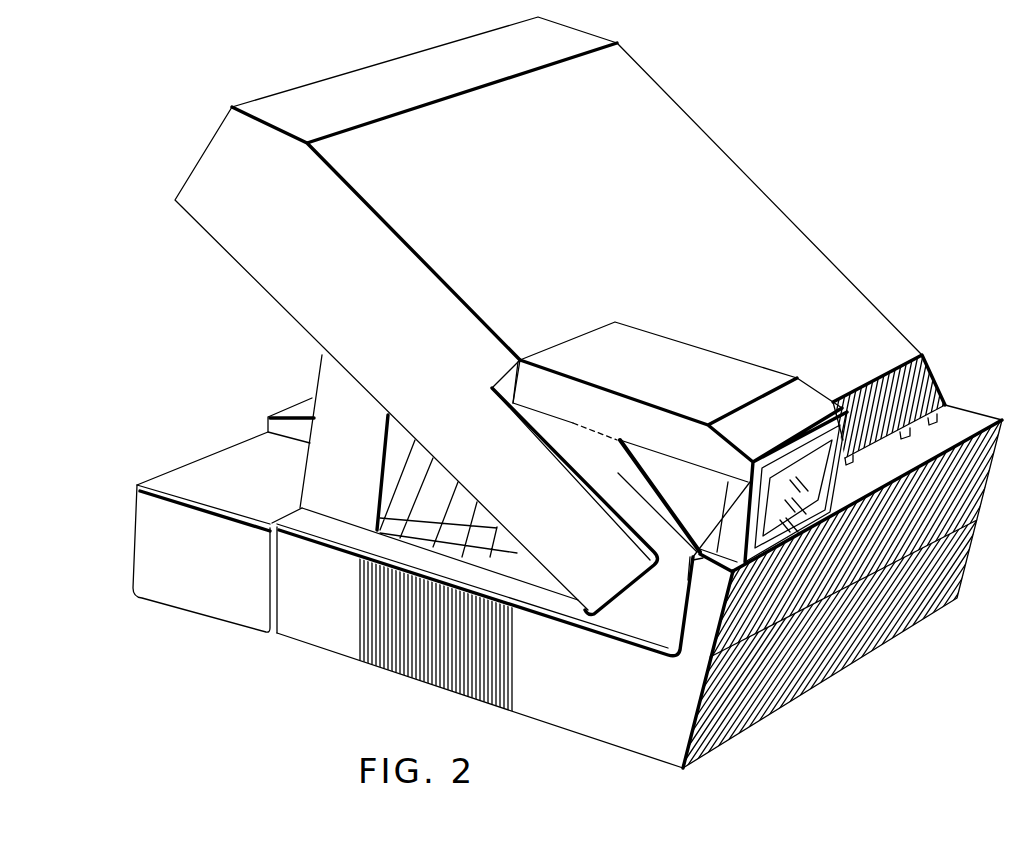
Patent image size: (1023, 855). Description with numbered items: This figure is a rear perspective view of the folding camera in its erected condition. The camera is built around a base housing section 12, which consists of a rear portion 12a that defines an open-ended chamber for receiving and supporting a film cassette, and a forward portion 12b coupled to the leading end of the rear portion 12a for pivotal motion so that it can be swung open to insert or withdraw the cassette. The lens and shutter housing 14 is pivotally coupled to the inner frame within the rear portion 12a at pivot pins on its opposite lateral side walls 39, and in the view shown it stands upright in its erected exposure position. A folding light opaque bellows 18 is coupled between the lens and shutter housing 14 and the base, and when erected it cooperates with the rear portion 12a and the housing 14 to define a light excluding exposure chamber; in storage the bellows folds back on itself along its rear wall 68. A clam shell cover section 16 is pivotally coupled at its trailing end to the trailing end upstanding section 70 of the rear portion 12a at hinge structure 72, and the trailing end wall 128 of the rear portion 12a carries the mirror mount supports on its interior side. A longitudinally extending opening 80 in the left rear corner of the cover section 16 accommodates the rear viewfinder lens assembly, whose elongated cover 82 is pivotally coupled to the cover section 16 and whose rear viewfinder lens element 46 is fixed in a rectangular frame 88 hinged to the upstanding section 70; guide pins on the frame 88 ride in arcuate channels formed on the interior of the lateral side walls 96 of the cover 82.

The base housing section 12 is at (578, 573).
The rear portion 12a is at (632, 752).
The forward portion 12b is at (207, 585).
The lens and shutter housing 14 is at (312, 368).
The cover section 16 is at (645, 93).
The bellows 18 is at (440, 508).
The lateral side walls 39 is at (322, 466).
The rear viewfinder lens element 46 is at (800, 462).
The rear wall 68 is at (640, 465).
The upstanding section 70 is at (982, 418).
The hinge structure 72 is at (934, 423).
The opening 80 is at (506, 378).
The cover 82 is at (683, 431).
The rectangular frame 88 is at (712, 555).
The lateral side walls 96 is at (683, 448).
The trailing end wall 128 is at (870, 640).